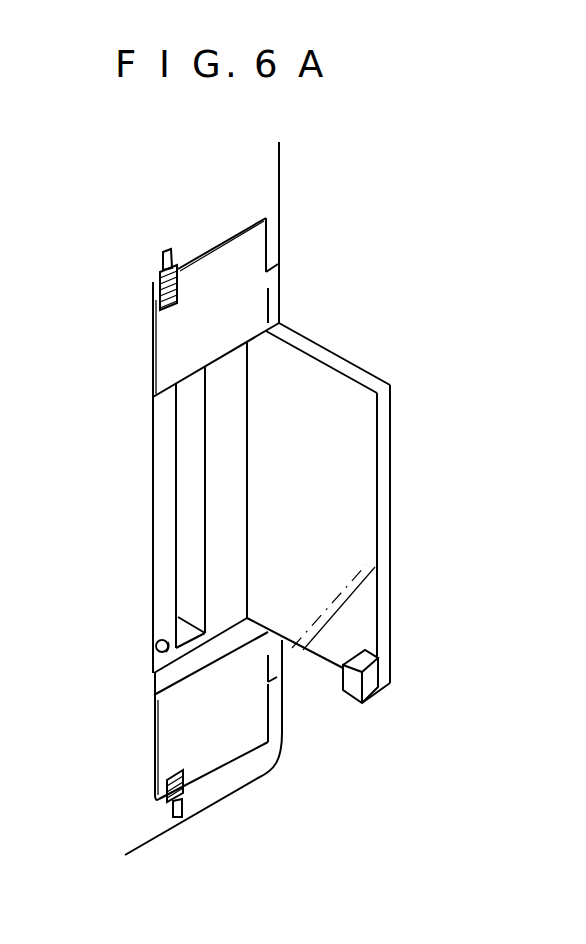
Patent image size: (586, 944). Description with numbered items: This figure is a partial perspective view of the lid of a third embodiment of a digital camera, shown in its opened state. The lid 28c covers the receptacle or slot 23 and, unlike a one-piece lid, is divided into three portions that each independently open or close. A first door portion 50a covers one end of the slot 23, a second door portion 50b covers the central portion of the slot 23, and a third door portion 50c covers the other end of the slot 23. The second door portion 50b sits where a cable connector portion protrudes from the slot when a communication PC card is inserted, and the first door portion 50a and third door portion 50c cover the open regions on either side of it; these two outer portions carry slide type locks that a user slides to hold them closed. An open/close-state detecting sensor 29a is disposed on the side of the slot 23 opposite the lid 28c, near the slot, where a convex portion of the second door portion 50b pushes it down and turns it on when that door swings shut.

The lid 28c is at (482, 277).
The first door portion 50a is at (157, 302).
The second door portion 50b is at (383, 421).
The third door portion 50c is at (247, 712).
The slot 23 is at (190, 557).
The open/close-state detecting sensor 29a is at (158, 656).